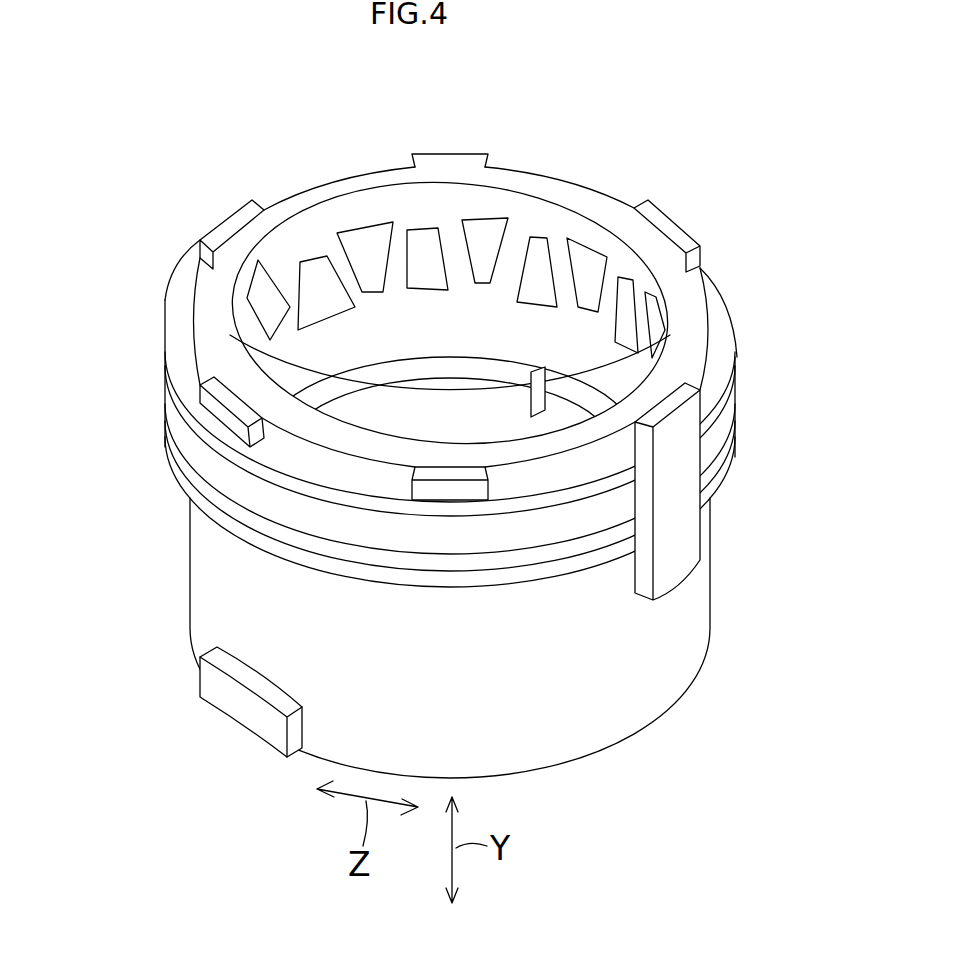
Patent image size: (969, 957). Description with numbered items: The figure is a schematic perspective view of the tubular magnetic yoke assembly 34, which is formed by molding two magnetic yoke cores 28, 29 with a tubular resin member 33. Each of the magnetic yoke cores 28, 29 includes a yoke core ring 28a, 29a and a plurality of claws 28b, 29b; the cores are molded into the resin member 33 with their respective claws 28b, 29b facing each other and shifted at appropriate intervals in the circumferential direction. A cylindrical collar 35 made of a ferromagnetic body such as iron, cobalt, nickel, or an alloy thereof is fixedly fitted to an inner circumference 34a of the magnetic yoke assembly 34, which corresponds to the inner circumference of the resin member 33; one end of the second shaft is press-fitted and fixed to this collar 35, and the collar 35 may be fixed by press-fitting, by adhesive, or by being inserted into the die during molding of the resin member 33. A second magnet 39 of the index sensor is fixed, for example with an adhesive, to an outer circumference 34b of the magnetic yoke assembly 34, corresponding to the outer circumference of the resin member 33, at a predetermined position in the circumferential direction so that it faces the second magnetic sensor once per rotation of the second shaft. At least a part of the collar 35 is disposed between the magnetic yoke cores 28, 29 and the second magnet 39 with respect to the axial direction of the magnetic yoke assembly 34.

The magnetic yoke core 28 is at (167, 278).
The yoke core ring 28a is at (177, 342).
The claws 28b is at (348, 246).
The magnetic yoke core 29 is at (157, 440).
The yoke core ring 29a is at (184, 428).
The claws 29b is at (427, 303).
The tubular resin member 33 is at (586, 190).
The magnetic yoke assembly 34 is at (520, 152).
The inner circumference 34a is at (612, 247).
The outer circumference 34b is at (567, 727).
The collar 35 is at (478, 360).
The second magnet 39 is at (237, 704).